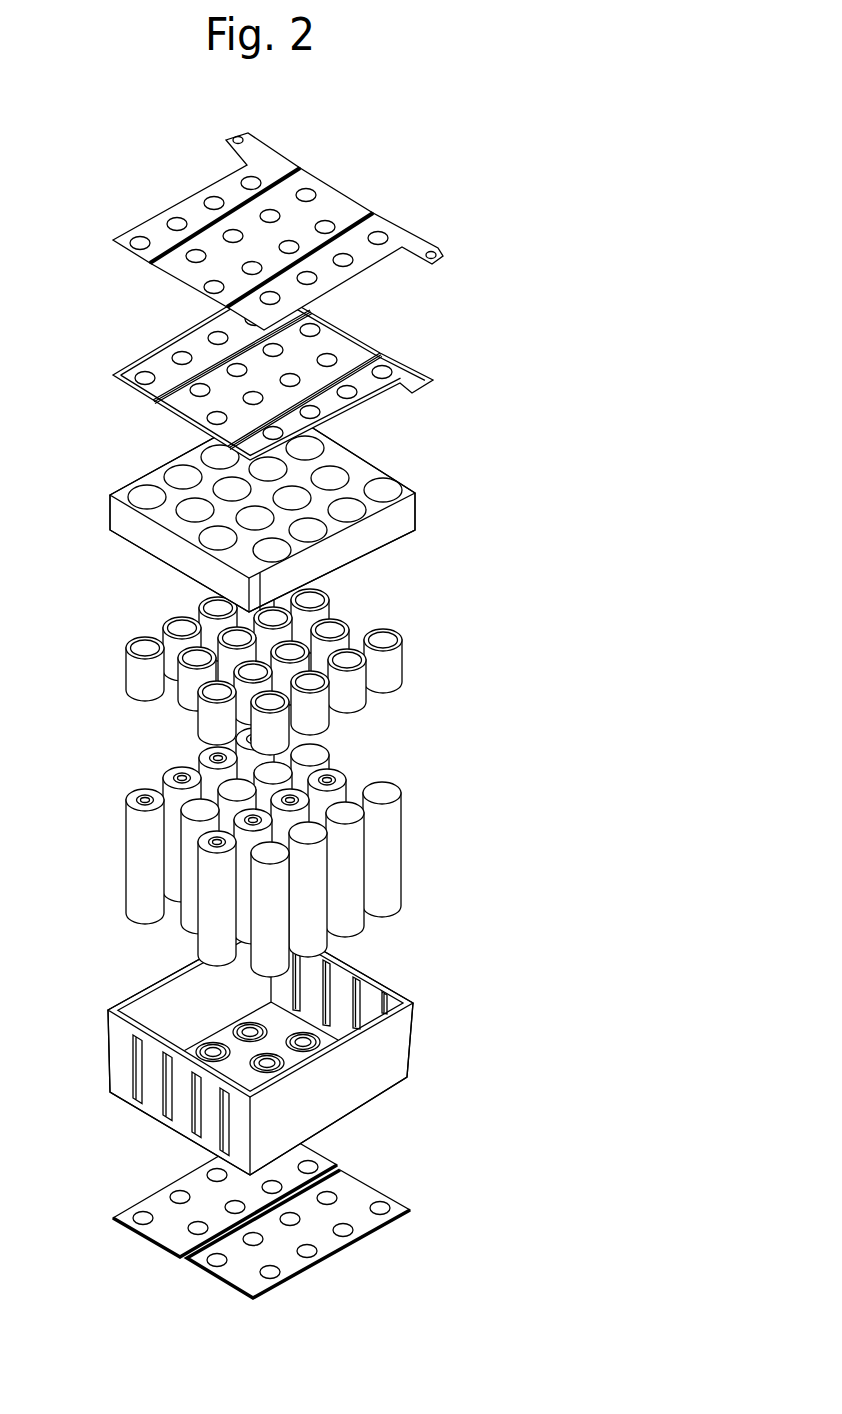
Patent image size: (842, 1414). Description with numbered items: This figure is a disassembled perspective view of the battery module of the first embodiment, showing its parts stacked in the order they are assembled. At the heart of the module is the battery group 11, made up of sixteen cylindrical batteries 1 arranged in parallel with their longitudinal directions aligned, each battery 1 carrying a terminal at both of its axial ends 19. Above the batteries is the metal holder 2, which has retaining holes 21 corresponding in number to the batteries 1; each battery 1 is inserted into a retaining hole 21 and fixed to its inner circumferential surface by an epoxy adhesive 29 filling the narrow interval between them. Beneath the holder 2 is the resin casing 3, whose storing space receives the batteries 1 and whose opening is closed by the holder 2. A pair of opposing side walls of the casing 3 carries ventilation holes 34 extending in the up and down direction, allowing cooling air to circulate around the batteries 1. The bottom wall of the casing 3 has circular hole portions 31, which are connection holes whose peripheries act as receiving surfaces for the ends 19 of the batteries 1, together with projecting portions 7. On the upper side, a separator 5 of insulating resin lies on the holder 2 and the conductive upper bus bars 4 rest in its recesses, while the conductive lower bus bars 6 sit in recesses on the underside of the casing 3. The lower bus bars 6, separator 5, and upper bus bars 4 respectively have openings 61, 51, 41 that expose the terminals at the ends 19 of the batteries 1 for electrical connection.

The battery 1 is at (262, 852).
The battery group 11 is at (351, 868).
The end 19 is at (144, 797).
The holder 2 is at (237, 508).
The retaining hole 21 is at (141, 495).
The adhesive 29 is at (133, 672).
The casing 3 is at (255, 1047).
The hole portion 31 is at (307, 1038).
The ventilation hole 34 is at (134, 1068).
The projecting portion 7 is at (210, 1046).
The upper bus bar 4 is at (247, 231).
The opening 41 is at (178, 225).
The separator 5 is at (300, 372).
The opening 51 is at (380, 375).
The lower bus bar 6 is at (271, 1212).
The opening 61 is at (345, 1229).